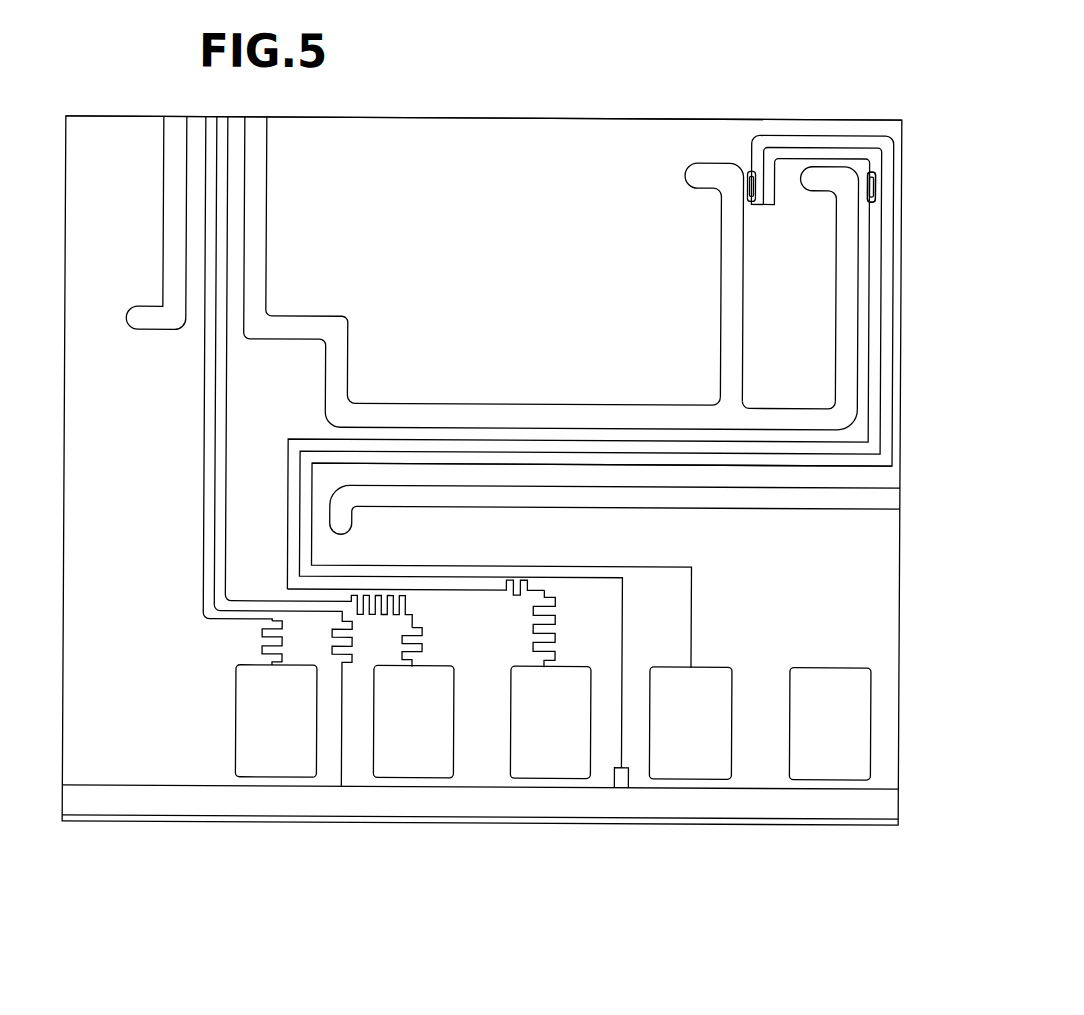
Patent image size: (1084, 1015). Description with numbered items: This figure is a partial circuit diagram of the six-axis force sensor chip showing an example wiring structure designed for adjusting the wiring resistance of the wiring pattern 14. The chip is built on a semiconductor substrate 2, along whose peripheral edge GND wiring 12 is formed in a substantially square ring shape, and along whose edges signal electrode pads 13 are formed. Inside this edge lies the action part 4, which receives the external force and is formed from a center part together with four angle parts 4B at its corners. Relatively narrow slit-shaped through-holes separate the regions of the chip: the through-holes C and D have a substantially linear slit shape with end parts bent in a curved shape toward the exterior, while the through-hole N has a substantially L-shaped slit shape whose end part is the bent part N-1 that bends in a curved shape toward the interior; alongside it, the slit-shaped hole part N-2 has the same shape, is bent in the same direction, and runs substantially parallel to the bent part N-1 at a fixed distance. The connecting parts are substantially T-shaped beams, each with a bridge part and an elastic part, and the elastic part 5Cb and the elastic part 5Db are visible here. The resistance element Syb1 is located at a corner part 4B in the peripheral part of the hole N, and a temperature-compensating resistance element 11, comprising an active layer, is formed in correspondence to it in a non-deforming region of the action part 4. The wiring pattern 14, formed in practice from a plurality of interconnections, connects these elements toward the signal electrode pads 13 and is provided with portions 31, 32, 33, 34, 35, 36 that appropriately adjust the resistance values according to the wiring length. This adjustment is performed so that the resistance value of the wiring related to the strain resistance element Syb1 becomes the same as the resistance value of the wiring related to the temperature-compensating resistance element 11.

The semiconductor substrate 2 is at (713, 115).
The action part 4 is at (533, 155).
The temperature-compensating resistance element 11 is at (745, 172).
The GND wiring 12 is at (108, 802).
The signal electrode pad 13 is at (260, 760).
The wiring pattern 14 is at (840, 128).
The resistance adjusting portion 31 is at (263, 638).
The resistance adjusting portion 32 is at (353, 655).
The resistance adjusting portion 33 is at (428, 646).
The resistance adjusting portion 34 is at (375, 594).
The resistance adjusting portion 35 is at (556, 628).
The resistance adjusting portion 36 is at (512, 583).
The angle part 4B is at (471, 275).
The elastic part 5Db is at (197, 188).
The elastic part 5Cb is at (838, 473).
The through-hole C is at (745, 498).
The through-hole D is at (170, 265).
The through-hole N is at (551, 273).
The bent part N-1 is at (840, 282).
The hole part N-2 is at (722, 290).
The resistance element Syb1 is at (872, 187).